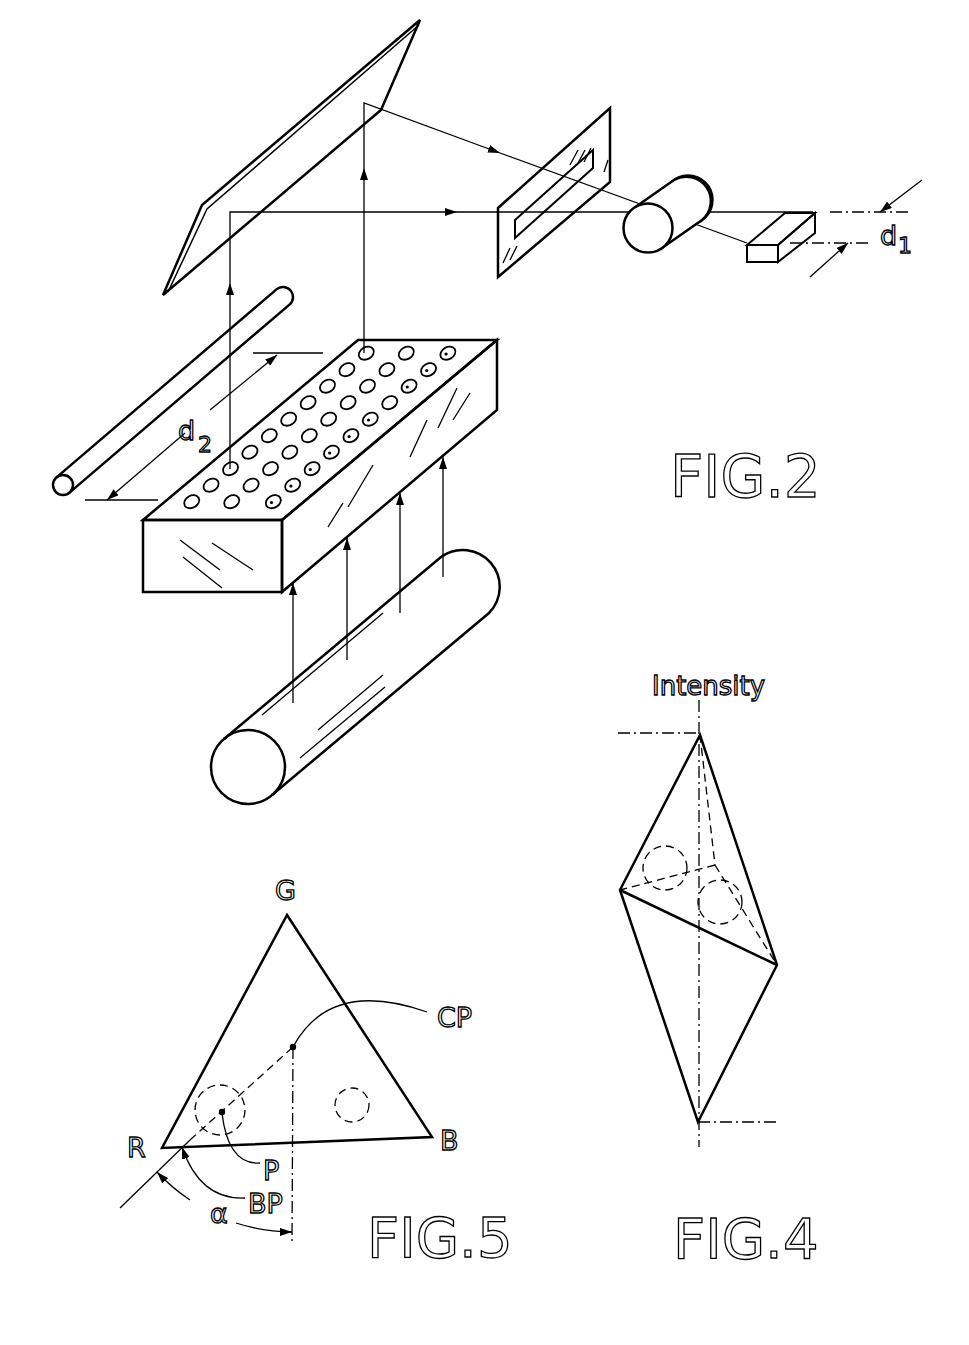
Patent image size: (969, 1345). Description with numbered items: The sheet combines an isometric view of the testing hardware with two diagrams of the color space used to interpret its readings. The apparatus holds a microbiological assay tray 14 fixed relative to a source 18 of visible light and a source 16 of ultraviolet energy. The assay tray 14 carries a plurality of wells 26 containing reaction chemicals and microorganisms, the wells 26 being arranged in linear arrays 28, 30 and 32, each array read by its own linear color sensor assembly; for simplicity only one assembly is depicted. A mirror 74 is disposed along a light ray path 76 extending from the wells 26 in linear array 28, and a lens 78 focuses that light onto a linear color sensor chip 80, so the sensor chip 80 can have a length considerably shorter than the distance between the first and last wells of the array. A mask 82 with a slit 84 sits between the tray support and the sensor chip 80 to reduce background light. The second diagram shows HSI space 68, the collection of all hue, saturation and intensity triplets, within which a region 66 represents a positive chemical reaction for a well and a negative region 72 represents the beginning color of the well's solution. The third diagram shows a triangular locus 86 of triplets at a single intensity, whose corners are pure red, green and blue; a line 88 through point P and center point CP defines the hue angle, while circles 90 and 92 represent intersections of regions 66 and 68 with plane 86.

In FIG. 2, the assay tray 14 is at (468, 436).
In FIG. 2, the source of ultraviolet electromagnetic waveform energy 16 is at (168, 387).
In FIG. 2, the source of visible light 18 is at (440, 653).
In FIG. 2, the wells 26 is at (321, 462).
In FIG. 2, the linear array of wells 28 is at (382, 337).
In FIG. 2, the linear array of wells 30 is at (418, 335).
In FIG. 2, the linear array of wells 32 is at (463, 335).
In FIG. 2, the mirror 74 is at (297, 123).
In FIG. 2, the light ray path 76 is at (367, 140).
In FIG. 2, the lens 78 is at (690, 175).
In FIG. 2, the linear color sensor chip 80 is at (787, 212).
In FIG. 2, the mask 82 is at (593, 127).
In FIG. 2, the slit 84 is at (595, 157).
In FIG. 4, the region of positive chemical reaction results 66 is at (733, 888).
In FIG. 4, the HSI space 68 is at (738, 1048).
In FIG. 4, the negative region 72 is at (663, 847).
In FIG. 5, the triangular locus 86 is at (235, 1015).
In FIG. 5, the line 88 is at (137, 1190).
In FIG. 5, the circle 90 is at (365, 1093).
In FIG. 5, the circle 92 is at (202, 1088).